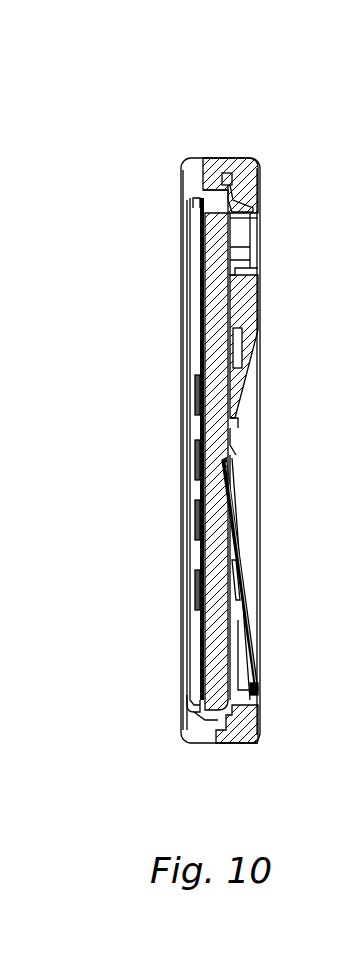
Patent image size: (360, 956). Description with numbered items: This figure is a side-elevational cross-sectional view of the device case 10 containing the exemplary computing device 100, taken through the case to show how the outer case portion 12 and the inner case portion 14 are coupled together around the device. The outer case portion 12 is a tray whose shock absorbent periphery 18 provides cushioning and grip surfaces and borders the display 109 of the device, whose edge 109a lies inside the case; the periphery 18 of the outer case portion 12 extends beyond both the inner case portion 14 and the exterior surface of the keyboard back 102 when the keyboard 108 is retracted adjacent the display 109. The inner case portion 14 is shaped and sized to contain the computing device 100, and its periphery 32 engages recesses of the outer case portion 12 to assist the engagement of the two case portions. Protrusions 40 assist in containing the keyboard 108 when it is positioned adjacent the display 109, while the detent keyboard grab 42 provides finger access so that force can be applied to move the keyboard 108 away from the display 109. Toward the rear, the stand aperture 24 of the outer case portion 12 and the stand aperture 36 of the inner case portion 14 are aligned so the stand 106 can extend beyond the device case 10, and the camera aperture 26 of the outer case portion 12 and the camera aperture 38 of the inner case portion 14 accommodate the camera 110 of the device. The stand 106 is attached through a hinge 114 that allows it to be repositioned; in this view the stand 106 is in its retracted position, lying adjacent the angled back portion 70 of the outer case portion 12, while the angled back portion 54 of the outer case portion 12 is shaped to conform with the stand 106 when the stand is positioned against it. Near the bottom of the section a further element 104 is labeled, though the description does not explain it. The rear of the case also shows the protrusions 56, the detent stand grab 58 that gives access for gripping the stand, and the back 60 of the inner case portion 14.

The device case 10 is at (118, 85).
The outer case portion 12 is at (250, 163).
The inner case portion 14 is at (247, 198).
The periphery 18 is at (212, 158).
The stand aperture 24 is at (240, 413).
The camera aperture 26 is at (248, 270).
The periphery 32 is at (231, 172).
The stand aperture 36 is at (240, 445).
The camera aperture 38 is at (248, 219).
The protrusions 40 is at (192, 215).
The detent keyboard grab 42 is at (186, 176).
The angled back portion 54 is at (243, 380).
The protrusions 56 is at (255, 695).
The detent stand grab 58 is at (253, 728).
The back 60 is at (253, 303).
The angled back portion 70 is at (240, 640).
The computing device 100 is at (212, 250).
The keyboard back 102 is at (196, 420).
The hook 104 is at (218, 738).
The stand 106 is at (240, 545).
The keyboard 108 is at (200, 352).
The display 109 is at (198, 300).
The edge 109a is at (190, 202).
The camera 110 is at (250, 246).
The hinge 114 is at (240, 463).